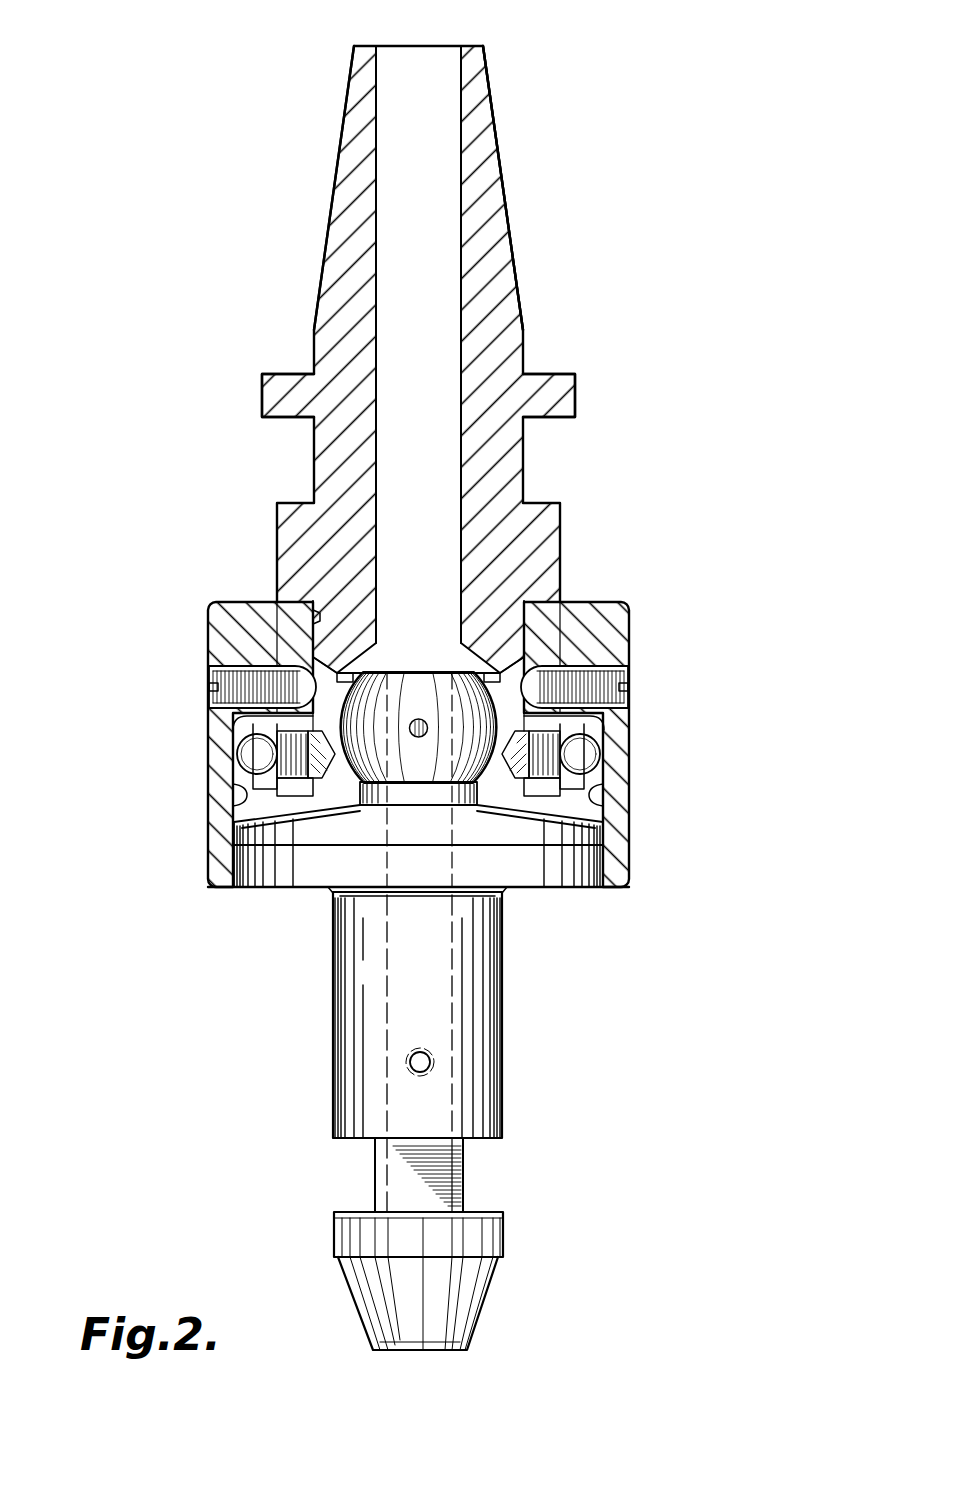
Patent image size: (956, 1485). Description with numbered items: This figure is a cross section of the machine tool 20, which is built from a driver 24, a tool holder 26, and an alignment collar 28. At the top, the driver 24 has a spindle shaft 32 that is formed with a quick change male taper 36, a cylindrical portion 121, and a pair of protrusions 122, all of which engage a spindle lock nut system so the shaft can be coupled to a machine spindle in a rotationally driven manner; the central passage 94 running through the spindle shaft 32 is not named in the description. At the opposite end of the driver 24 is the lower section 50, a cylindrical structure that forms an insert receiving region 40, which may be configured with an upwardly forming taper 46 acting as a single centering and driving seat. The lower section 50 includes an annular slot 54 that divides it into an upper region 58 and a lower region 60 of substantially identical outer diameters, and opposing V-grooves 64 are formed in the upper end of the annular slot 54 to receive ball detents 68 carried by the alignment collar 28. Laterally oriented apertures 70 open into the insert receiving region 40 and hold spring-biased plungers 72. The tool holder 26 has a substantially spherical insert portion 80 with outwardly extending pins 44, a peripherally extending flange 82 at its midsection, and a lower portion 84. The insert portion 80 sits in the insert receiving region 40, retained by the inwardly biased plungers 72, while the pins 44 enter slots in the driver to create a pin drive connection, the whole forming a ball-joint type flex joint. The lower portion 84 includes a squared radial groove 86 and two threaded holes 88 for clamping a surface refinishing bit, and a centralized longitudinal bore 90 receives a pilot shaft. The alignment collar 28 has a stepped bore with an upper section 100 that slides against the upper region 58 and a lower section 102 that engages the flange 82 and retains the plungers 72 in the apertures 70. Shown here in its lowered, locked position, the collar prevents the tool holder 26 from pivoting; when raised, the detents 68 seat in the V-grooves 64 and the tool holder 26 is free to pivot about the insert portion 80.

The machine tool 20 is at (158, 405).
The driver 24 is at (258, 482).
The tool holder 26 is at (323, 1012).
The alignment collar 28 is at (630, 623).
The spindle shaft 32 is at (562, 265).
The male taper 36 is at (505, 160).
The insert receiving region 40 is at (597, 820).
The pins 44 is at (445, 660).
The taper 46 is at (427, 720).
The lower section 50 is at (587, 588).
The annular slot 54 is at (547, 635).
The upper region 58 is at (547, 533).
The lower region 60 is at (550, 720).
The V-grooves 64 is at (317, 620).
The ball detents 68 is at (228, 683).
The apertures 70 is at (555, 790).
The plungers 72 is at (240, 720).
The insert portion 80 is at (345, 688).
The flange 82 is at (540, 880).
The lower portion 84 is at (507, 1045).
The squared radial groove 86 is at (487, 1185).
The threaded holes 88 is at (350, 1222).
The bore 90 is at (455, 1308).
The central bore 94 is at (385, 202).
The upper section 100 is at (300, 628).
The lower section 102 is at (245, 790).
The cylindrical portion 121 is at (524, 353).
The protrusions 122 is at (273, 395).